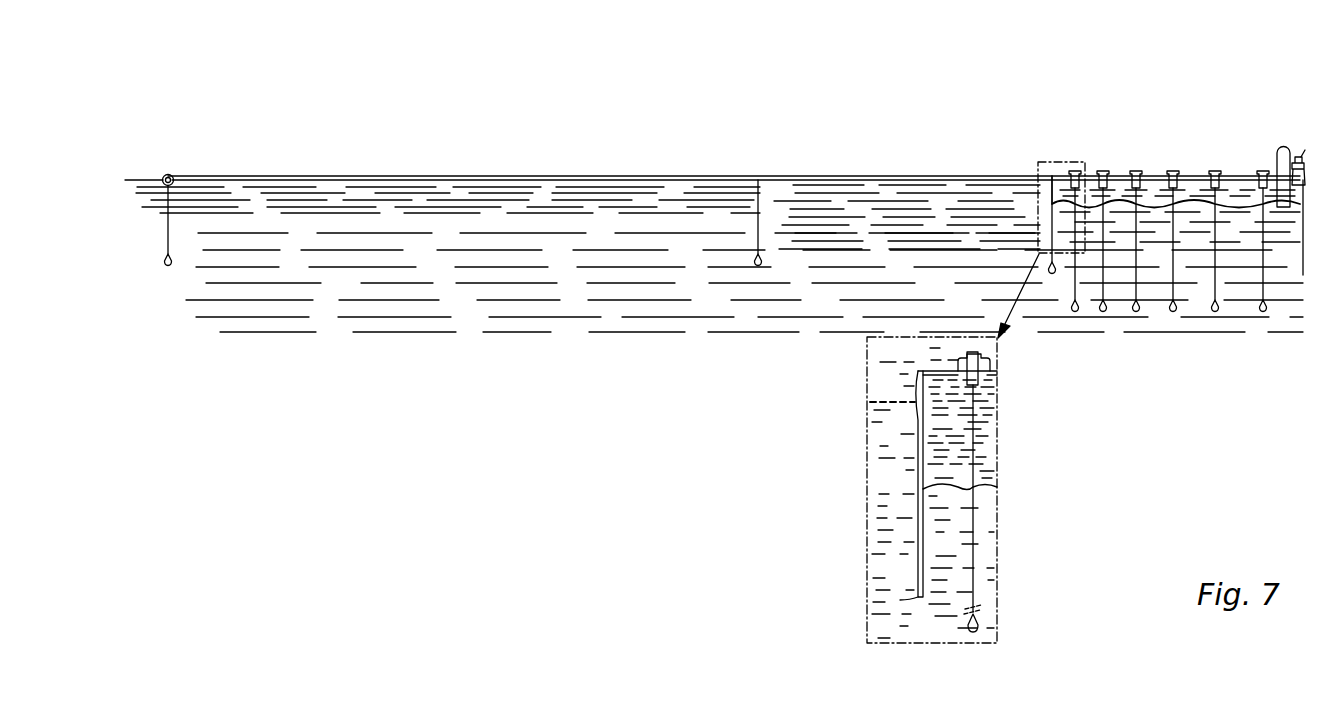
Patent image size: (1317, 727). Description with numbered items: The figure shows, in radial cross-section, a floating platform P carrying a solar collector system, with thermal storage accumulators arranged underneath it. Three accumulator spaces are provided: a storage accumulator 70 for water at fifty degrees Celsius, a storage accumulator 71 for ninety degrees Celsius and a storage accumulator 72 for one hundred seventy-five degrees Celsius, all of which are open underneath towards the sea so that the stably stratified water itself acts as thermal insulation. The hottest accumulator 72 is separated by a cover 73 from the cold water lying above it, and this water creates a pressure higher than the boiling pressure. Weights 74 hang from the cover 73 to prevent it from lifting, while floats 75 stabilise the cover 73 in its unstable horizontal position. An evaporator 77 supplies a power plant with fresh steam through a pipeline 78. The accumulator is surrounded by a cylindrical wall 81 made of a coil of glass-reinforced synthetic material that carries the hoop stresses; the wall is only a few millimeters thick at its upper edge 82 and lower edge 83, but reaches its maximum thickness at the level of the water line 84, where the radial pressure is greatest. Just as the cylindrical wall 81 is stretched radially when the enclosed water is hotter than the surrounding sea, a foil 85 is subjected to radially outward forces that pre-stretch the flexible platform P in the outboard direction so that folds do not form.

The platform P is at (424, 178).
The storage accumulator 70 is at (342, 212).
The storage accumulator 71 is at (812, 215).
The storage accumulator 72 is at (1113, 245).
The cover 73 is at (1247, 206).
The weights 74 is at (1174, 308).
The floats 75 is at (1175, 171).
The evaporator 77 is at (1279, 152).
The pipeline 78 is at (1300, 156).
The cylindrical wall 81 is at (917, 428).
The upper edge 82 is at (918, 372).
The lower edge 83 is at (918, 597).
The water line 84 is at (882, 402).
The foil 85 is at (170, 208).